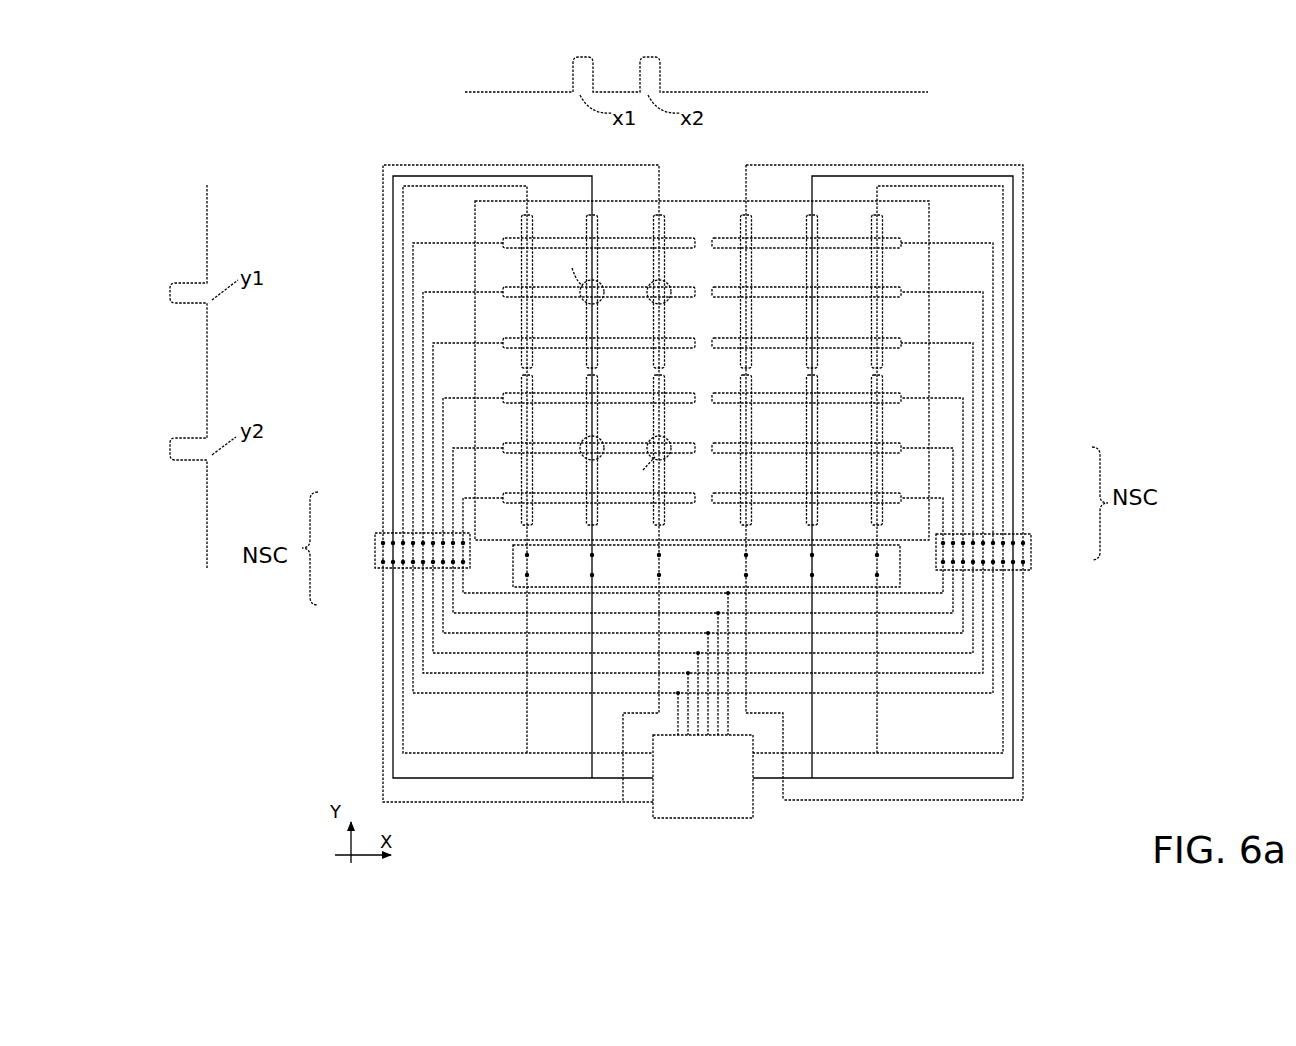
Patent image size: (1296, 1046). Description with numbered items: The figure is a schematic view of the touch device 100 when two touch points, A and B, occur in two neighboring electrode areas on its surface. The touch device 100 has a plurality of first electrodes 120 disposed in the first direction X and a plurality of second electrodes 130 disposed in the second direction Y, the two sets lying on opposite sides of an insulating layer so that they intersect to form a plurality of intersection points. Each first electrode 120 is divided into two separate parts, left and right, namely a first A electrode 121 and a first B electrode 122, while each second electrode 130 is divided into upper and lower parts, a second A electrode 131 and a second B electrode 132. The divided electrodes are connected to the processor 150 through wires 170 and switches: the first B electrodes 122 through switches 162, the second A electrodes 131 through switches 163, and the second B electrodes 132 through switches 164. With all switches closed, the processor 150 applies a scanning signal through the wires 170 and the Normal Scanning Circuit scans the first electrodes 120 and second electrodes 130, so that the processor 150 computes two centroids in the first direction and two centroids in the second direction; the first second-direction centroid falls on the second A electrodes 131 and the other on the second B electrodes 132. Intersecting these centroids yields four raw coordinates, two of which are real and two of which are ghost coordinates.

The touch device 100 is at (420, 145).
The first electrodes 120 is at (893, 235).
The first A electrode 121 is at (650, 238).
The first B electrode 122 is at (757, 238).
The second electrodes 130 is at (820, 222).
The second A electrode 131 is at (746, 215).
The second B electrode 132 is at (740, 468).
The processor 150 is at (703, 776).
The switches 162 is at (400, 535).
The switches 163 is at (375, 550).
The switches 164 is at (513, 575).
The wires 170 is at (1025, 468).